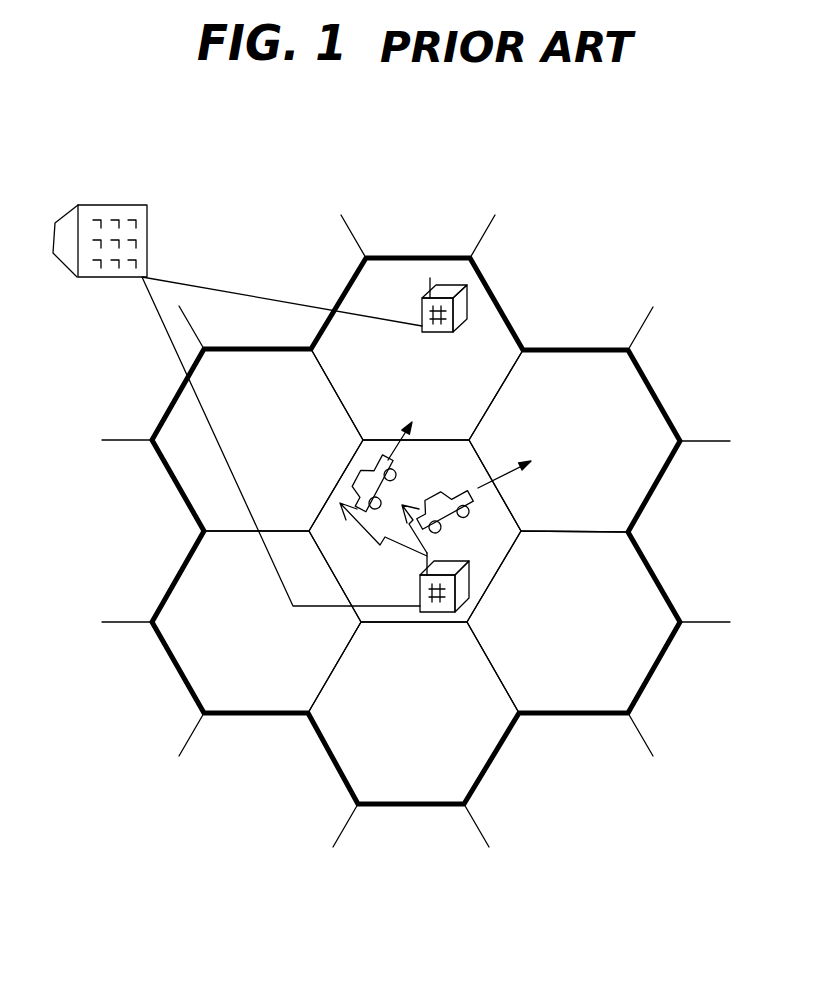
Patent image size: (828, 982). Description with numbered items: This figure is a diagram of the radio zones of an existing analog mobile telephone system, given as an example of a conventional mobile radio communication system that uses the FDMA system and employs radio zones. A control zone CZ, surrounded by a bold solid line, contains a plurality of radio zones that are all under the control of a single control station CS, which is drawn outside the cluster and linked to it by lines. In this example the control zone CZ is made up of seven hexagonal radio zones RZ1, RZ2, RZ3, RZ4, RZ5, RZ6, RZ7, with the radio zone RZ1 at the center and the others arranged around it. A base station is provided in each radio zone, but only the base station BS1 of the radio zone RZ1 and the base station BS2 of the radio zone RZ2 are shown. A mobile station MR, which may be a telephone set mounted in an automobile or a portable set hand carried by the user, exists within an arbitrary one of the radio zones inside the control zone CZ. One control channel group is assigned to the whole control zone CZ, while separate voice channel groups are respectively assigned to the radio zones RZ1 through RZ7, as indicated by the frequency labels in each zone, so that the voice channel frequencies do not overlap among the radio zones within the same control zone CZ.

The control station CS is at (117, 278).
The base station BS1 is at (470, 582).
The base station BS2 is at (467, 303).
The mobile station MR is at (352, 472).
The control zone CZ is at (674, 404).
The radio zone RZ1 is at (415, 531).
The radio zone RZ2 is at (417, 349).
The radio zone RZ3 is at (574, 441).
The radio zone RZ4 is at (573, 622).
The radio zone RZ5 is at (413, 713).
The radio zone RZ6 is at (256, 622).
The radio zone RZ7 is at (257, 440).